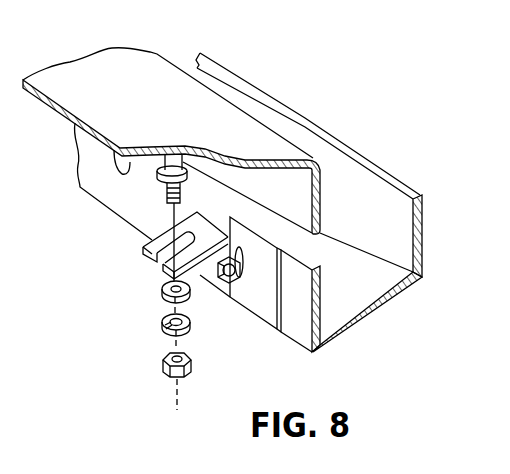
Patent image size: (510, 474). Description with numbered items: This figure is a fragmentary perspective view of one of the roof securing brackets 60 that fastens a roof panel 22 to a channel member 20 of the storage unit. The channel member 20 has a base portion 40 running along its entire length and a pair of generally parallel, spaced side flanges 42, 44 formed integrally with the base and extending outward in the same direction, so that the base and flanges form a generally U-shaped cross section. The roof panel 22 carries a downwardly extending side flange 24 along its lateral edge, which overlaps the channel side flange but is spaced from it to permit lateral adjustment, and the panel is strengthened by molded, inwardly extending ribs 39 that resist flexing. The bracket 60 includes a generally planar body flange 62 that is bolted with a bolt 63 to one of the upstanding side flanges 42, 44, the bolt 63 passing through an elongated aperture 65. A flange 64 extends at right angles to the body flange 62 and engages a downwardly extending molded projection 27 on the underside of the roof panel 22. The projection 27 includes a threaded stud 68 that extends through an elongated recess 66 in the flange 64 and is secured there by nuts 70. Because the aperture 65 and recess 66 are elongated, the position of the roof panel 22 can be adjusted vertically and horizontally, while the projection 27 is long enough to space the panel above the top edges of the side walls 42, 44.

The channel member 20 is at (312, 202).
The roof panel 22 is at (105, 48).
The side flange 24 is at (281, 200).
The molded projection 27 is at (175, 160).
The rib 39 is at (117, 165).
The base portion 40 is at (348, 277).
The side flange 42 is at (387, 176).
The side flange 44 is at (286, 317).
The roof securing bracket 60 is at (185, 282).
The body flange 62 is at (249, 300).
The bolt 63 is at (227, 279).
The flange 64 is at (142, 247).
The aperture 65 is at (245, 260).
The recess 66 is at (158, 261).
The threaded stud 68 is at (166, 194).
The nut 70 is at (193, 367).